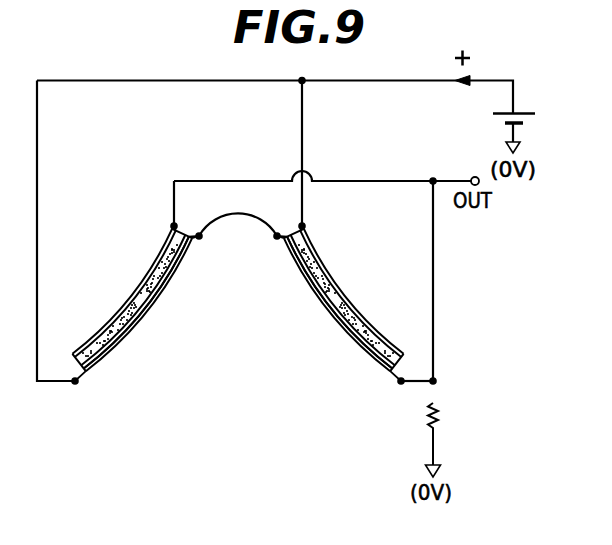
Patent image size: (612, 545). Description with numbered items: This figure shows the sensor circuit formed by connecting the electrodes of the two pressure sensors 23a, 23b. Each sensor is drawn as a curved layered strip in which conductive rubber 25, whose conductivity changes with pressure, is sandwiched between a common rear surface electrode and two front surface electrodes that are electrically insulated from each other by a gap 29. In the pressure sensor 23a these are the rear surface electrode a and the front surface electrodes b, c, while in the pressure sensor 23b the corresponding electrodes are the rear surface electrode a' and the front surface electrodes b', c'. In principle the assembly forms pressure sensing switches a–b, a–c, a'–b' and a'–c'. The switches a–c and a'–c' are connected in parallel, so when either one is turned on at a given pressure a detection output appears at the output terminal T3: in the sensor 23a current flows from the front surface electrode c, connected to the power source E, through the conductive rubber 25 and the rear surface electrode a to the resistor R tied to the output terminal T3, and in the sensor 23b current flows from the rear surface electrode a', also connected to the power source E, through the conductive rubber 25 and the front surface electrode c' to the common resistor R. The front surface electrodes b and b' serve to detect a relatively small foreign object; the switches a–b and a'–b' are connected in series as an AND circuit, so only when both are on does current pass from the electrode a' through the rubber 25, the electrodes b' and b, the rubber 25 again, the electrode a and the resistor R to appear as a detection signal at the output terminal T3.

The pressure sensor 23a is at (156, 321).
The pressure sensor 23b is at (323, 321).
The conductive rubber 25 is at (97, 338).
The gap 29 is at (128, 344).
The rear surface electrode a is at (116, 253).
The front surface electrode b is at (196, 298).
The front surface electrode c is at (110, 399).
The rear surface electrode a' is at (364, 257).
The front surface electrode b' is at (277, 294).
The front surface electrode c' is at (365, 406).
The output terminal T3 is at (471, 178).
The power source E is at (514, 122).
The resistor R is at (444, 440).